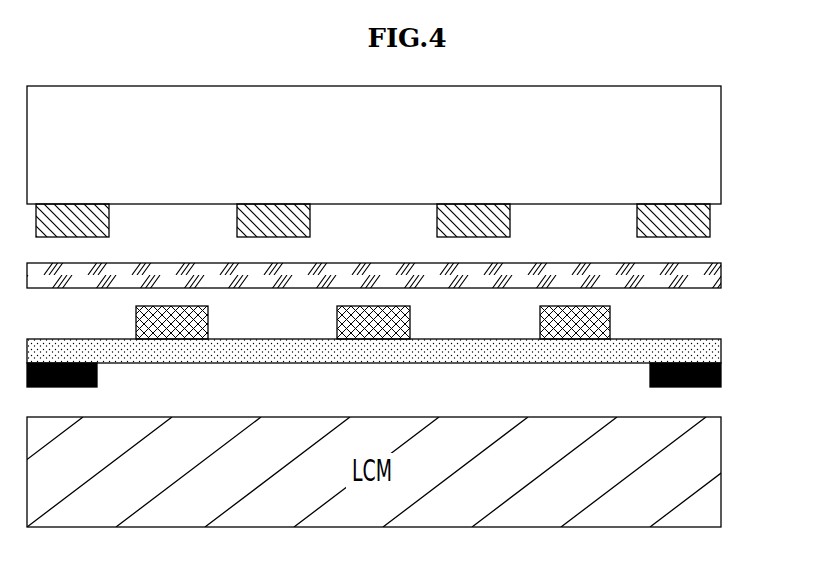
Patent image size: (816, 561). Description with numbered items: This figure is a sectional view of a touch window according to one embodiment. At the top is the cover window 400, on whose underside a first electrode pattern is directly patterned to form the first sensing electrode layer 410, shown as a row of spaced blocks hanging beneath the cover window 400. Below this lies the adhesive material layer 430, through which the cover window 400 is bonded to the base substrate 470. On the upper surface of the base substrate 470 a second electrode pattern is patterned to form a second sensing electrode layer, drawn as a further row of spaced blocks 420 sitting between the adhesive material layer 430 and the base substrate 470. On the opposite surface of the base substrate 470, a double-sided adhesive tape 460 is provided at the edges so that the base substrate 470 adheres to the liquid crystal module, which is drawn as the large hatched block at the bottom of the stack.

The cover window 400 is at (713, 133).
The first sensing electrode layer 410 is at (711, 215).
The adhesive material layer 430 is at (722, 274).
The touch sensor pads 420 is at (610, 325).
The base substrate 470 is at (721, 348).
The double-sided adhesive tape 460 is at (721, 372).